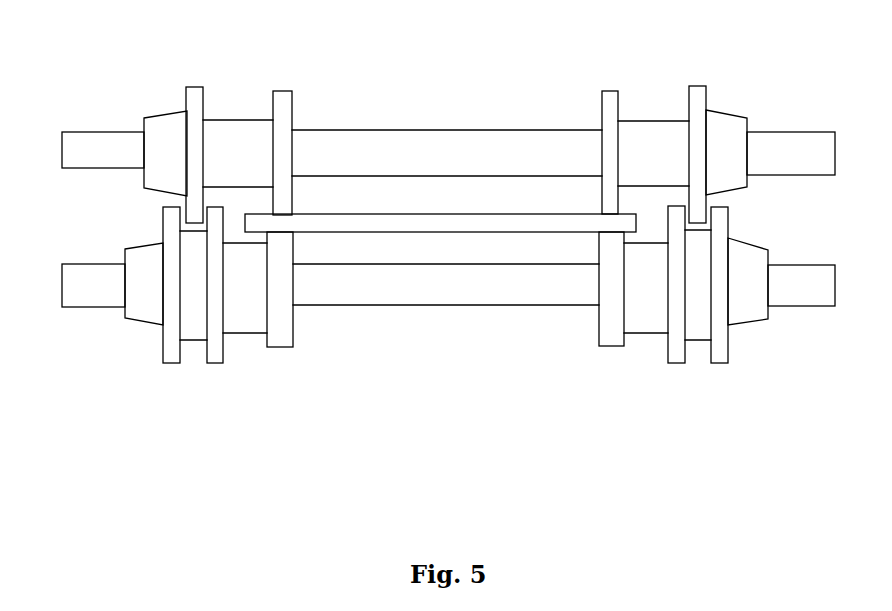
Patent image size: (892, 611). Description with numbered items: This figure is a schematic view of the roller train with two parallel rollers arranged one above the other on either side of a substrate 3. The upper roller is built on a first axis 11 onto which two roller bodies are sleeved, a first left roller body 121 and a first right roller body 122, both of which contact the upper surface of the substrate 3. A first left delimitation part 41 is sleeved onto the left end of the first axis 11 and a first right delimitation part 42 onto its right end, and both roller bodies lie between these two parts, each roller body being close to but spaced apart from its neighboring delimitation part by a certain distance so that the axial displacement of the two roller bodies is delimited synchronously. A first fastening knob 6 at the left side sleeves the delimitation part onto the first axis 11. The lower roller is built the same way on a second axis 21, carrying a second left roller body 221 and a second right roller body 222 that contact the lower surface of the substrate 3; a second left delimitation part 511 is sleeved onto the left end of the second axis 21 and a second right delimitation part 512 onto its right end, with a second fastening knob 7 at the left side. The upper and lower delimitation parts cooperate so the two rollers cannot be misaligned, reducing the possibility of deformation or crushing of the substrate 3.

The substrate 3 is at (438, 213).
The first fastening knob 6 is at (170, 112).
The second fastening knob 7 is at (147, 322).
The first axis 11 is at (323, 130).
The second axis 21 is at (335, 306).
The first left delimitation part 41 is at (193, 87).
The first right delimitation part 42 is at (698, 105).
The first left roller body 121 is at (285, 90).
The first right roller body 122 is at (612, 102).
The second left roller body 221 is at (277, 347).
The second right roller body 222 is at (612, 337).
The second left delimitation part 511 is at (180, 363).
The second right delimitation part 512 is at (683, 363).